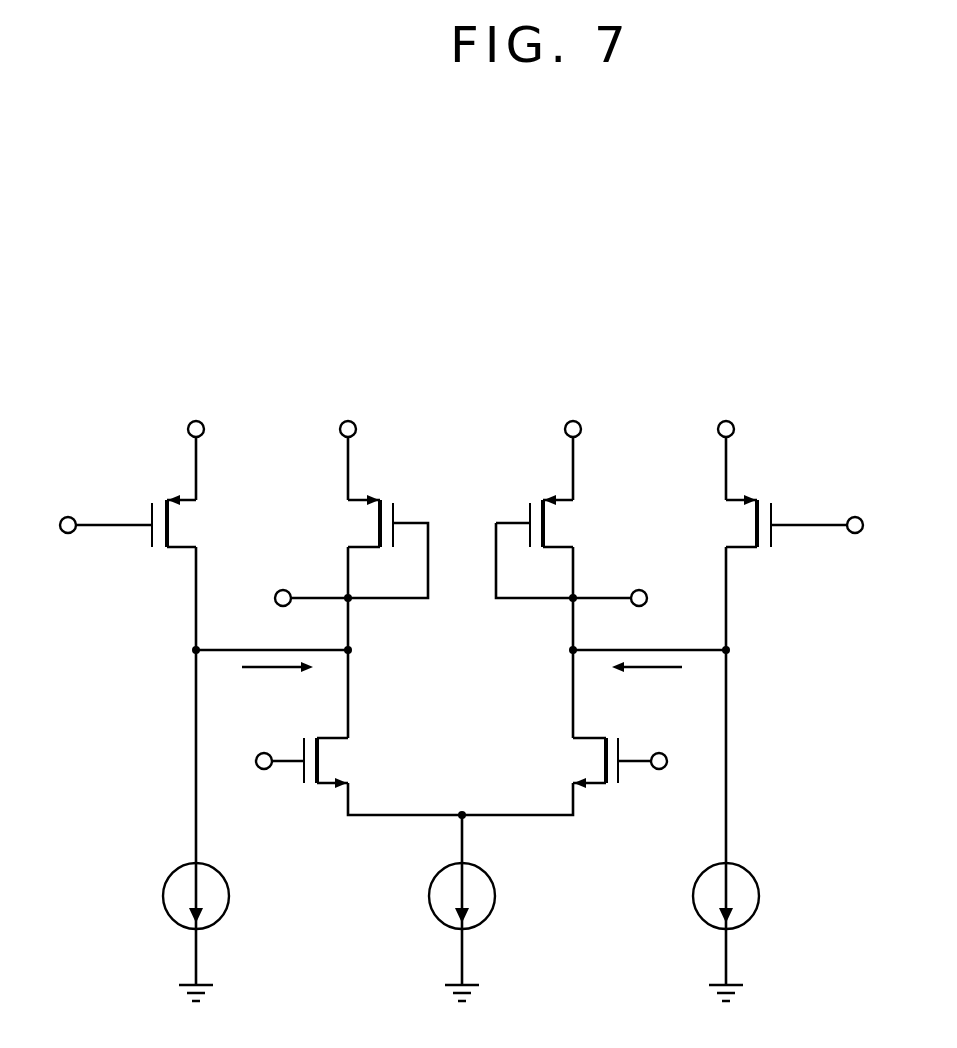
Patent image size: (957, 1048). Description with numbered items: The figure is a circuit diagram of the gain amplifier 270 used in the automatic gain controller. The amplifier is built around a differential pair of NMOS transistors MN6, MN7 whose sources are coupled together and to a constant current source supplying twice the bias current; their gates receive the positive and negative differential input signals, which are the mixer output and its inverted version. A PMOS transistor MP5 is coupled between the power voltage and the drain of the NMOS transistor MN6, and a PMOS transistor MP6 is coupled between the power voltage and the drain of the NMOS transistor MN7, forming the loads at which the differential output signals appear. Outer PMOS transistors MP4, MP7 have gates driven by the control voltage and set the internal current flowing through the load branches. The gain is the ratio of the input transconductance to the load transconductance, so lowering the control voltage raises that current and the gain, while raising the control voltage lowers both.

The gain amplifier 270 is at (533, 383).
The PMOS transistor MP4 is at (184, 521).
The PMOS transistor MP5 is at (359, 521).
The PMOS transistor MP6 is at (561, 521).
The PMOS transistor MP7 is at (735, 521).
The NMOS transistor MN6 is at (337, 763).
The NMOS transistor MN7 is at (584, 763).